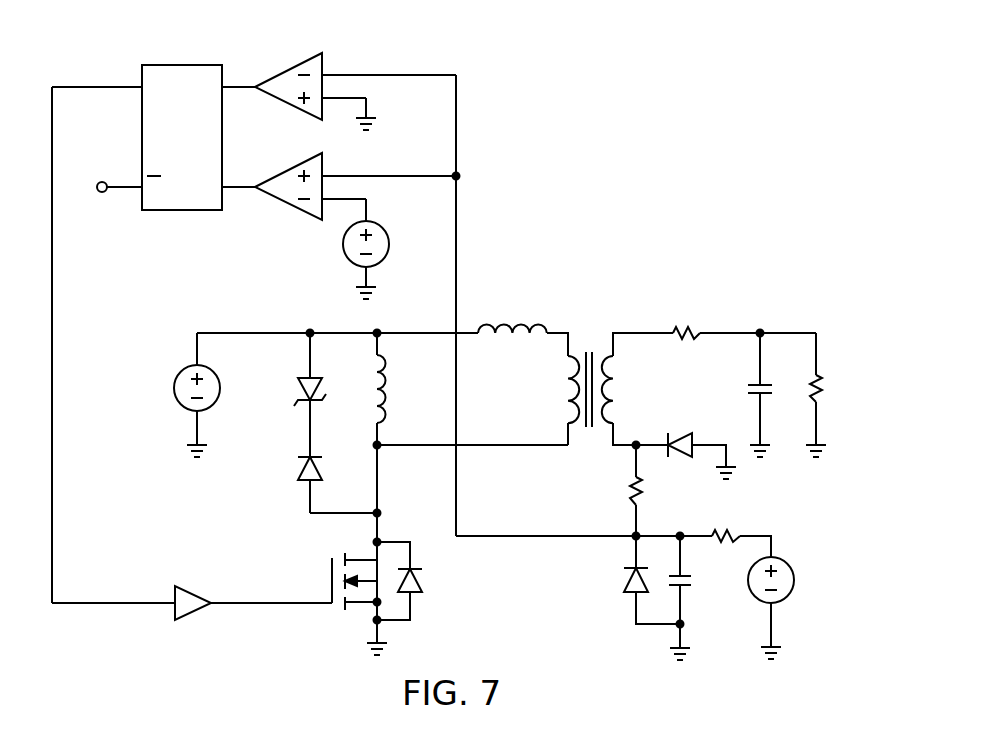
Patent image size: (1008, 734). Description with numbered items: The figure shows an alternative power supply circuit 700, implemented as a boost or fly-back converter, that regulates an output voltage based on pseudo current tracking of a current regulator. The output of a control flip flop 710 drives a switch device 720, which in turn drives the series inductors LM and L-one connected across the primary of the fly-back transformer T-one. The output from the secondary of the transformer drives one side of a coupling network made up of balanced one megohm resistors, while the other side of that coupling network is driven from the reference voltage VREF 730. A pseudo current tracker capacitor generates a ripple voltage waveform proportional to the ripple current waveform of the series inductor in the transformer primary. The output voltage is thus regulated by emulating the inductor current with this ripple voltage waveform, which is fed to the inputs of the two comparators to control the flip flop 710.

The power supply circuit 700 is at (667, 63).
The control flip flop 710 is at (180, 65).
The switch device 720 is at (330, 568).
The VREF 730 is at (794, 578).